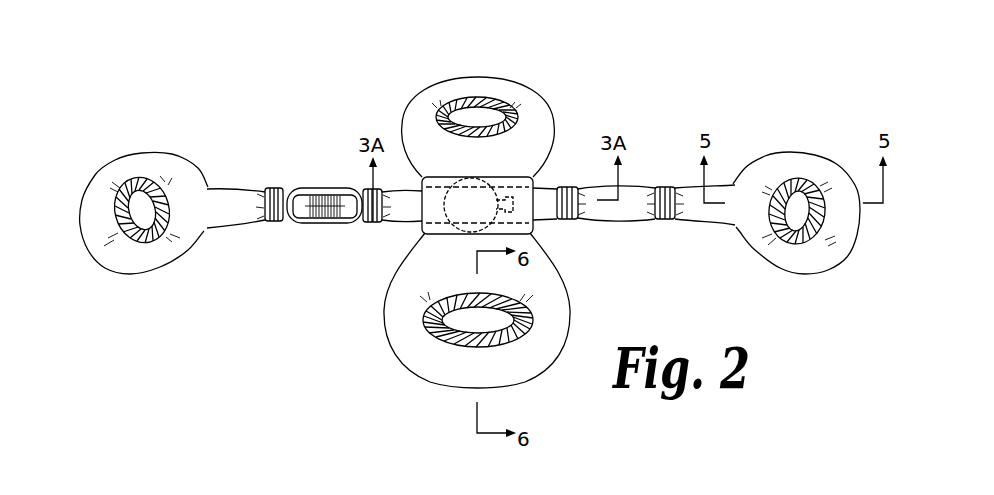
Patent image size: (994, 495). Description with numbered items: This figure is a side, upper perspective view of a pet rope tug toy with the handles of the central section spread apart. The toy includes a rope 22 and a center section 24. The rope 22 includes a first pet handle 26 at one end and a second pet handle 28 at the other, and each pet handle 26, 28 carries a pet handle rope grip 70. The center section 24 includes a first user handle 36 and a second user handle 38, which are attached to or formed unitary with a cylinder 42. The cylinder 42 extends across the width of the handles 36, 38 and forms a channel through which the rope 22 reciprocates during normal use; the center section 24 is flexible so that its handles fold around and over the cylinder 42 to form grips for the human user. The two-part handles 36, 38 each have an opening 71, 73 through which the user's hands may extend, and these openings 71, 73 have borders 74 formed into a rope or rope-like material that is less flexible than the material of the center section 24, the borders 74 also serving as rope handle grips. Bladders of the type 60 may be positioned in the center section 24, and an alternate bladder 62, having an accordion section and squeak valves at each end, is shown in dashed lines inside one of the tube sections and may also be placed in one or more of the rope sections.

The rope 22 is at (303, 251).
The center section 24 is at (482, 227).
The first pet handle 26 is at (790, 272).
The second pet handle 28 is at (134, 273).
The first user handle 36 is at (420, 95).
The second user handle 38 is at (432, 386).
The cylinder 42 is at (500, 180).
The bladder 60 is at (462, 234).
The alternate bladder 62 is at (320, 192).
The pet handle rope grip 70 is at (141, 180).
The opening 71 is at (488, 118).
The opening 73 is at (472, 322).
The border 74 is at (470, 98).